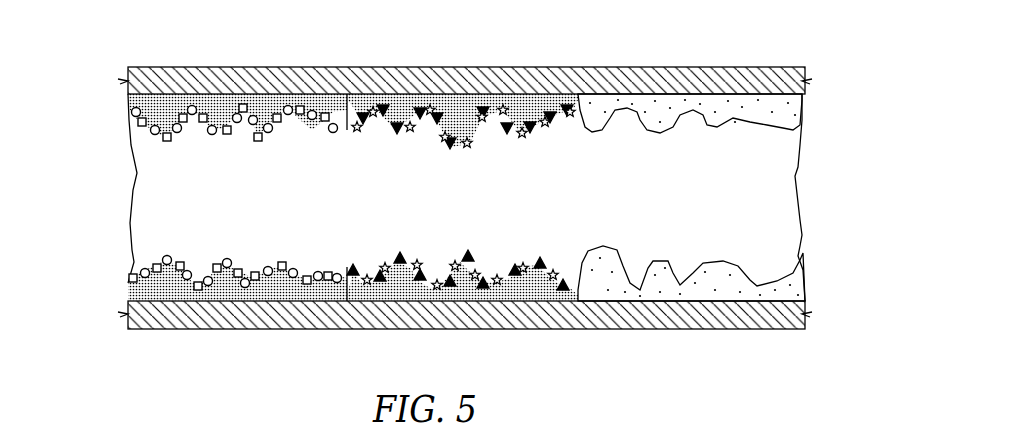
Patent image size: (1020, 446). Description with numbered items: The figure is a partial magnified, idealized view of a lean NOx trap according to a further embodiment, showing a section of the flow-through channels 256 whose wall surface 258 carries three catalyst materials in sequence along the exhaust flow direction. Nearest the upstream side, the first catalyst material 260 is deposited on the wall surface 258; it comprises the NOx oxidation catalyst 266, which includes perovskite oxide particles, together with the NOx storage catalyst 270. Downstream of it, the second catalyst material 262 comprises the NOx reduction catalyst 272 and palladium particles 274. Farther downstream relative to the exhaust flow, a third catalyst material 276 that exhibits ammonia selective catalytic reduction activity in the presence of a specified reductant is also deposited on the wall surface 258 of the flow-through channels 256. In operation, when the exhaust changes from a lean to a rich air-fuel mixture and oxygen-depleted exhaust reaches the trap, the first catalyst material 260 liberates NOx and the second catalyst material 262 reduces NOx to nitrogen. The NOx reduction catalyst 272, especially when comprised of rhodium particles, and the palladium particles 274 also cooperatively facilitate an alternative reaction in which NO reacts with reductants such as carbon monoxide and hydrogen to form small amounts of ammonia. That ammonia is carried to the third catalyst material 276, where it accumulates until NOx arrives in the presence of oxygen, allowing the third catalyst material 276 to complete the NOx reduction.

The flow-through channels 256 is at (127, 170).
The wall surface 258 is at (426, 197).
The first catalyst material 260 is at (166, 107).
The second catalyst material 262 is at (461, 108).
The NOx oxidation catalyst 266 is at (247, 289).
The NOx storage catalyst 270 is at (198, 290).
The NOx reduction catalyst 272 is at (455, 287).
The palladium particles 274 is at (437, 290).
The third catalyst material 276 is at (665, 108).